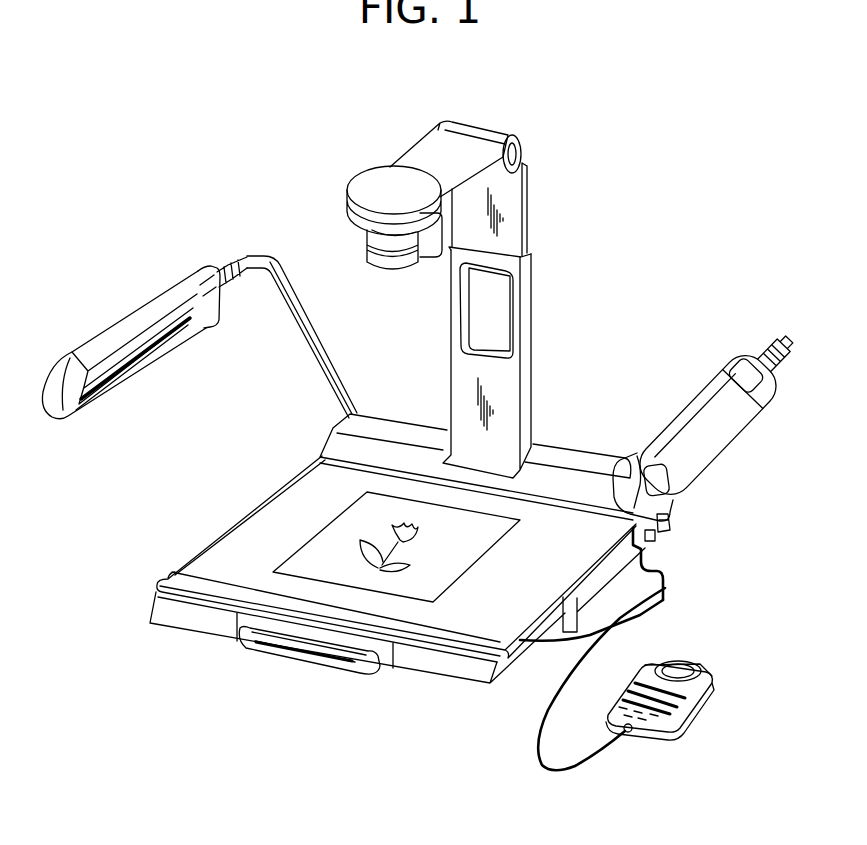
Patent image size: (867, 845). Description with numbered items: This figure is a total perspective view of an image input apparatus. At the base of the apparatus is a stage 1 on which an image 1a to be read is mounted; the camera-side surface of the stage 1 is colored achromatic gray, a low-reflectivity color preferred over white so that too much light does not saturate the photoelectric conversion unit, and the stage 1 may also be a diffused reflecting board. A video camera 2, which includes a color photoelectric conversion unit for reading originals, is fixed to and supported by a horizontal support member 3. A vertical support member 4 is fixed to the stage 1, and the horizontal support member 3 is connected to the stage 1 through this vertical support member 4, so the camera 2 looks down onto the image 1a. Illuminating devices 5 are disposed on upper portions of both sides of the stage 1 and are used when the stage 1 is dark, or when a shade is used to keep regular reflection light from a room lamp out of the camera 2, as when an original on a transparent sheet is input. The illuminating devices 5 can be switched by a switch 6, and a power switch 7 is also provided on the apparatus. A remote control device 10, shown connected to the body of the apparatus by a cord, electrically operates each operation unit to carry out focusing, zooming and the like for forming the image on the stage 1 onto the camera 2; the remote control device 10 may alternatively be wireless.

The stage 1 is at (474, 624).
The image 1a is at (303, 556).
The video camera 2 is at (374, 254).
The horizontal support member 3 is at (430, 155).
The vertical support member 4 is at (527, 290).
The illuminating devices 5 is at (121, 326).
The switch 6 is at (652, 551).
The power switch 7 is at (670, 541).
The remote control device 10 is at (685, 712).